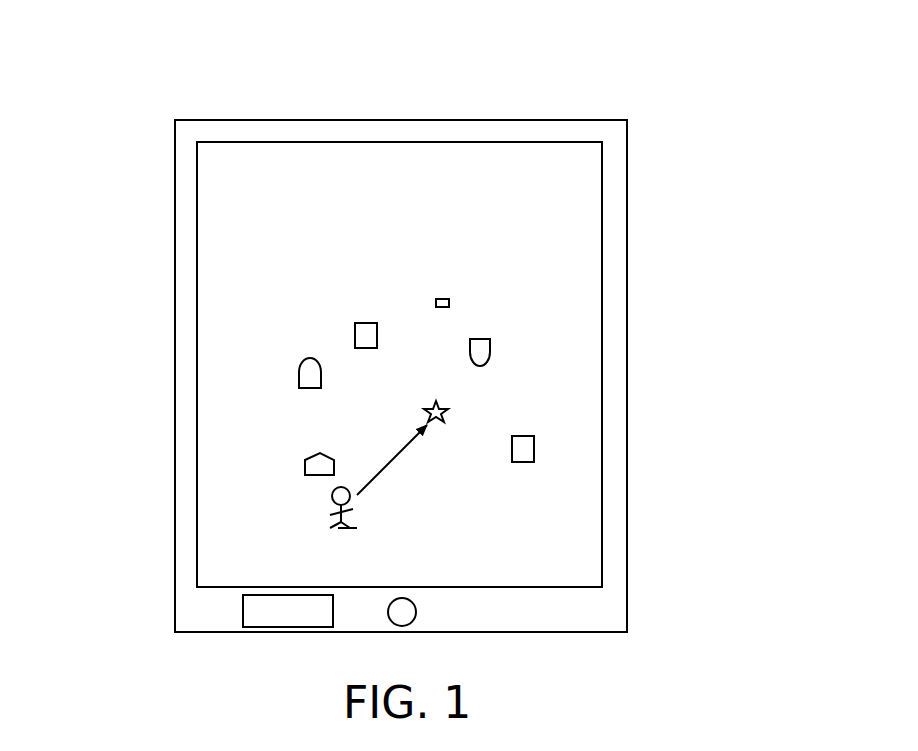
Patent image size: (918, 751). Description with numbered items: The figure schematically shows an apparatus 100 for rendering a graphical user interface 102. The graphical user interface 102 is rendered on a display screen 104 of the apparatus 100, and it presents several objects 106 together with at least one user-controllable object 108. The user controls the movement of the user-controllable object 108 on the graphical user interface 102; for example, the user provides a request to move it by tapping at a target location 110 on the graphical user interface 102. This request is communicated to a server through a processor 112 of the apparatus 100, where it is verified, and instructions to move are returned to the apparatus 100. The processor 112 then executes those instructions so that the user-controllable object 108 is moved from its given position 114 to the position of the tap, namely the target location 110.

The apparatus 100 is at (669, 49).
The graphical user interface 102 is at (215, 178).
The display screen 104 is at (325, 131).
The objects 106 is at (450, 300).
The user-controllable object 108 is at (331, 497).
The target location 110 is at (449, 412).
The processor 112 is at (288, 611).
The given position 114 is at (340, 525).